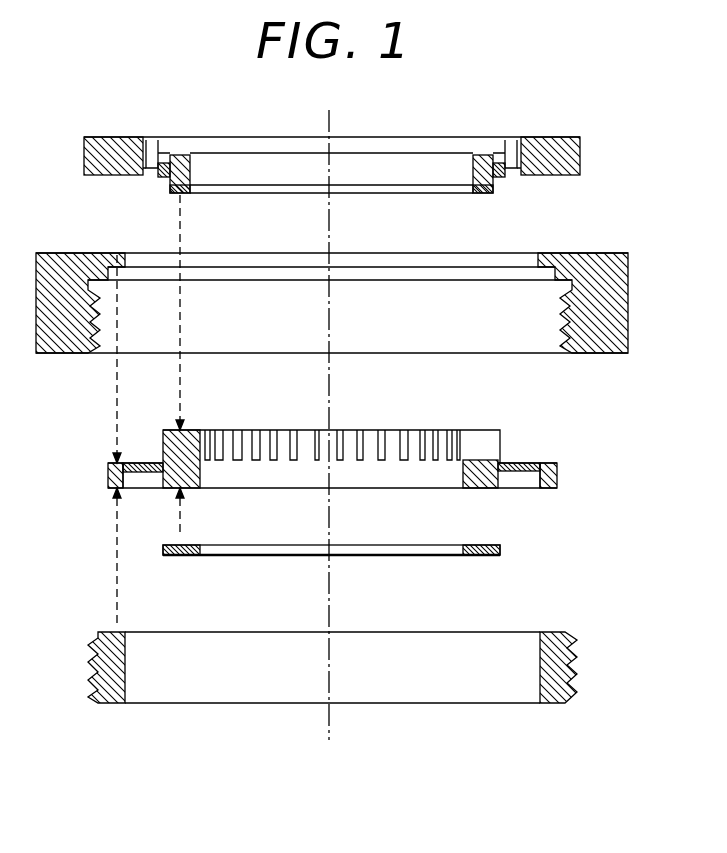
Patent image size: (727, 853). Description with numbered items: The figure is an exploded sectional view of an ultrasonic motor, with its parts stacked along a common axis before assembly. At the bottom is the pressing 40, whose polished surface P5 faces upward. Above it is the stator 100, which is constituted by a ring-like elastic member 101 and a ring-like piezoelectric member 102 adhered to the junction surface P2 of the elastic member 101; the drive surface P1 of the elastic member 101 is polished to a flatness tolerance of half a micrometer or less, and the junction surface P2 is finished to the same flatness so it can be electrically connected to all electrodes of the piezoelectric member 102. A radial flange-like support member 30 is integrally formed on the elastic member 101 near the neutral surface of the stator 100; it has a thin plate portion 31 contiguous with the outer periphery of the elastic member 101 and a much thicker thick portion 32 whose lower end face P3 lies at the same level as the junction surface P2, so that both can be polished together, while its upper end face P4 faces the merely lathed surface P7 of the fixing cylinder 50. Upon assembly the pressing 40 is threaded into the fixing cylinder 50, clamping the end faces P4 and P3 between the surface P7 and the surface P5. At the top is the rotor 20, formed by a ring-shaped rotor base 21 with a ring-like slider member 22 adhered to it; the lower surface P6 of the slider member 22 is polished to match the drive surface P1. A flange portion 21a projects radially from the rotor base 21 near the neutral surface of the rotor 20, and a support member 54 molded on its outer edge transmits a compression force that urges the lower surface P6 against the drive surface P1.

The rotor 20 is at (603, 185).
The support member 54 is at (109, 141).
The flange portion 21a is at (161, 166).
The rotor base 21 is at (494, 183).
The slider member 22 is at (494, 190).
The lower surface of the slider member P6 is at (175, 194).
The surface of the fixing cylinder P7 is at (108, 271).
The fixing cylinder 50 is at (622, 307).
The support member 30 is at (628, 425).
The thin plate portion 31 is at (528, 463).
The thick portion 32 is at (558, 478).
The drive surface P1 is at (178, 422).
The junction surface P2 is at (172, 491).
The lower end face of the thick portion P3 is at (115, 491).
The upper end face of the thick portion P4 is at (113, 460).
The surface of the pressing P5 is at (104, 630).
The stator 100 is at (575, 525).
The elastic member 101 is at (448, 478).
The piezoelectric member 102 is at (497, 554).
The pressing 40 is at (572, 662).